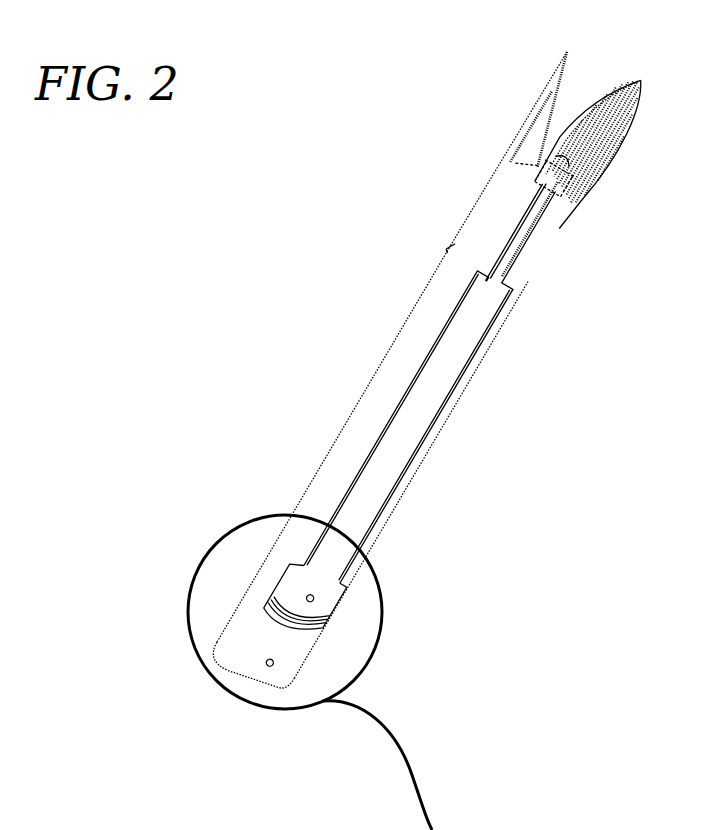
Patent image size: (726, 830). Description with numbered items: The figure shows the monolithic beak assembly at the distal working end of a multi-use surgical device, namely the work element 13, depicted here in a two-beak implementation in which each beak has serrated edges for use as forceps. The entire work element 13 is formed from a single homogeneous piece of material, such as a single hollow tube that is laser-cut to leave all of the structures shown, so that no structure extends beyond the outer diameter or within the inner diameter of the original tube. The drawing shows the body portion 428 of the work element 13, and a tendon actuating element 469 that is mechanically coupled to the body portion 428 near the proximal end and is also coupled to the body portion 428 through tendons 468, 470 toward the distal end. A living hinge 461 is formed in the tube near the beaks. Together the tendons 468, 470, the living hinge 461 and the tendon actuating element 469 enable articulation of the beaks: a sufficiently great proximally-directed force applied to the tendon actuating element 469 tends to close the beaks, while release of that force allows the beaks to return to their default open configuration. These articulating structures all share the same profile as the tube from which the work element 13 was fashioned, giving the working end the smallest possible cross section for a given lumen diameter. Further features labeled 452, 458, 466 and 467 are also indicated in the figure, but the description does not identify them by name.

The work element 13 is at (343, 306).
The body portion 428 is at (363, 408).
The second jaw 452 is at (636, 76).
The distal end of shaft 458 is at (460, 233).
The living hinge 461 is at (526, 128).
The pivot 466 is at (563, 152).
The detail region 467 is at (380, 573).
The tendon 468 is at (597, 100).
The tendon actuating element 469 is at (393, 458).
The tendon 470 is at (530, 228).